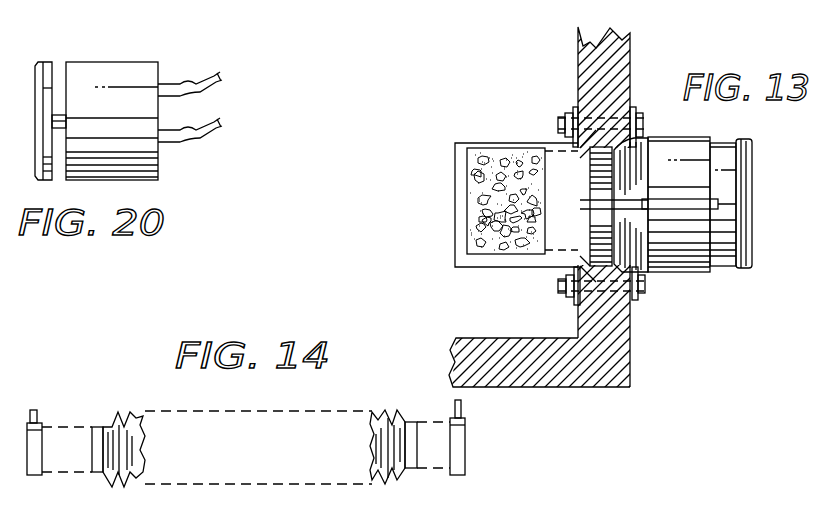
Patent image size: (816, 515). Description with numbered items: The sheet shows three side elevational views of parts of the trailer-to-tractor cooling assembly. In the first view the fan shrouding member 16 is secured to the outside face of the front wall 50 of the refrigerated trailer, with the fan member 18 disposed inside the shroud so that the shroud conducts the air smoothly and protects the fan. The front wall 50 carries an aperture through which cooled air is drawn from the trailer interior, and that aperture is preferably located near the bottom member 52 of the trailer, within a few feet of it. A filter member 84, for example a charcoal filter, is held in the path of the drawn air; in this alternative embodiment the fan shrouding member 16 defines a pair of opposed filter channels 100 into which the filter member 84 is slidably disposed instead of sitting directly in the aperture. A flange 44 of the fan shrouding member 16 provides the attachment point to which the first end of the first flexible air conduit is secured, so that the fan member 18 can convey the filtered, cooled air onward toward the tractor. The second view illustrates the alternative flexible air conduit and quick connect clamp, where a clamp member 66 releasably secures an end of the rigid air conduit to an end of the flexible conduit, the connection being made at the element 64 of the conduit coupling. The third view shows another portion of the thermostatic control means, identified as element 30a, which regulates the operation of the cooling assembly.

In FIG. 20, the connector module 30a is at (117, 110).
In FIG. 14, the clamp member 66 is at (35, 450).
In FIG. 14, the grommet 64 is at (135, 435).
In FIG. 13, the front wall 50 is at (622, 85).
In FIG. 13, the bottom member 52 is at (565, 367).
In FIG. 13, the flange 44 is at (632, 135).
In FIG. 13, the filter channels 100 is at (485, 218).
In FIG. 13, the filter member 84 is at (512, 200).
In FIG. 13, the fan shrouding member 16 is at (687, 288).
In FIG. 13, the fan member 18 is at (680, 232).